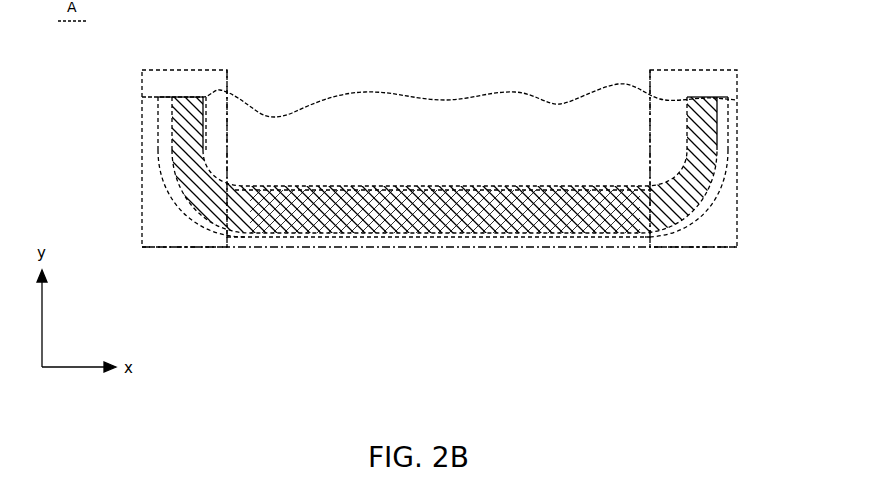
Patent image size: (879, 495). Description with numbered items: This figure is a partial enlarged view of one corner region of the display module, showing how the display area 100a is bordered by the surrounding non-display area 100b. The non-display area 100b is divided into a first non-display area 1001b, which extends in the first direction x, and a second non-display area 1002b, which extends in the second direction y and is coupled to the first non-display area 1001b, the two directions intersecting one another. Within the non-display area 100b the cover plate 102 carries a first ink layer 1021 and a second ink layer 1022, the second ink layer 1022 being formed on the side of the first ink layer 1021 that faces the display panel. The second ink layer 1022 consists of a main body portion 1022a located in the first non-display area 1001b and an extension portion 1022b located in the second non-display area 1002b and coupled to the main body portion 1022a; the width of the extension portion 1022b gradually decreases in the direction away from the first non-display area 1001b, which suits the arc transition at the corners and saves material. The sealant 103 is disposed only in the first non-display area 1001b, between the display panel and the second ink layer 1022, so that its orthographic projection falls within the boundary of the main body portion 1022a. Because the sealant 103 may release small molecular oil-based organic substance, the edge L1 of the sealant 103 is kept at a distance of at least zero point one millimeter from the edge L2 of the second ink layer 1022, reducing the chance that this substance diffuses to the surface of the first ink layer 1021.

The display area 100a is at (533, 125).
The non-display area 100b is at (298, 326).
The first non-display area 1001b is at (300, 233).
The second non-display area 1002b is at (160, 233).
The cover plate 102 is at (143, 167).
The first ink layer 1021 is at (172, 122).
The second ink layer 1022 is at (190, 173).
The main body portion 1022a is at (455, 228).
The extension portion 1022b is at (717, 157).
The sealant 103 is at (605, 210).
The edge of the sealant L1 is at (535, 205).
The edge of the second ink layer L2 is at (493, 198).